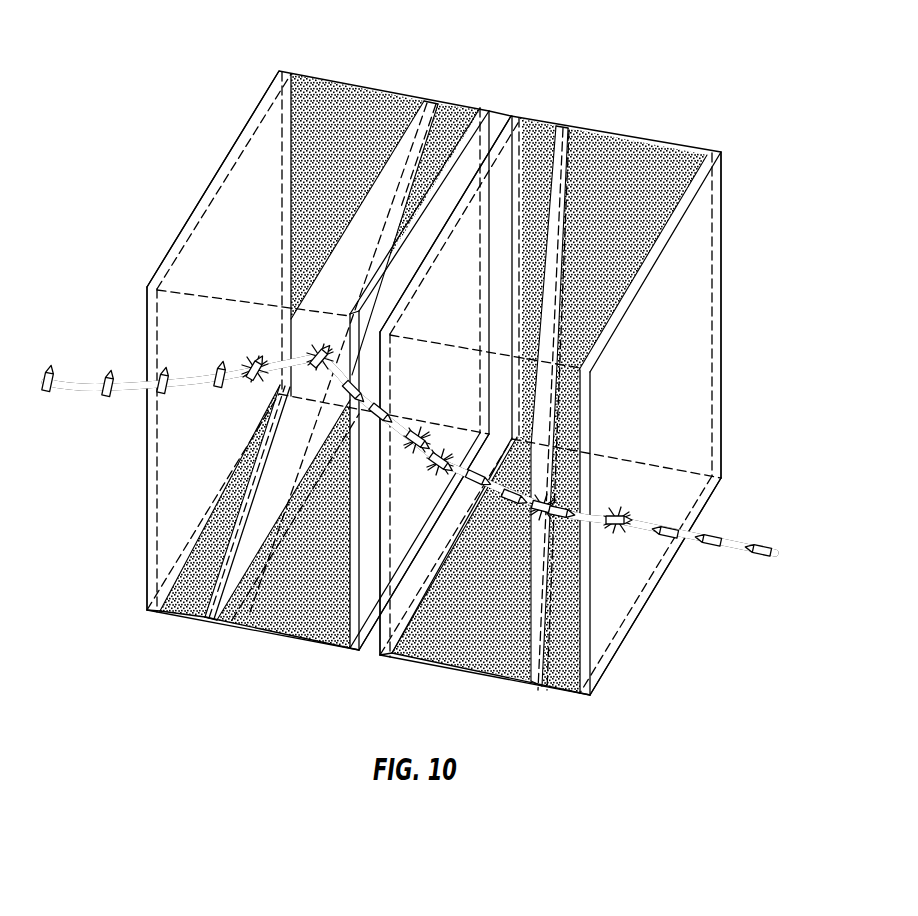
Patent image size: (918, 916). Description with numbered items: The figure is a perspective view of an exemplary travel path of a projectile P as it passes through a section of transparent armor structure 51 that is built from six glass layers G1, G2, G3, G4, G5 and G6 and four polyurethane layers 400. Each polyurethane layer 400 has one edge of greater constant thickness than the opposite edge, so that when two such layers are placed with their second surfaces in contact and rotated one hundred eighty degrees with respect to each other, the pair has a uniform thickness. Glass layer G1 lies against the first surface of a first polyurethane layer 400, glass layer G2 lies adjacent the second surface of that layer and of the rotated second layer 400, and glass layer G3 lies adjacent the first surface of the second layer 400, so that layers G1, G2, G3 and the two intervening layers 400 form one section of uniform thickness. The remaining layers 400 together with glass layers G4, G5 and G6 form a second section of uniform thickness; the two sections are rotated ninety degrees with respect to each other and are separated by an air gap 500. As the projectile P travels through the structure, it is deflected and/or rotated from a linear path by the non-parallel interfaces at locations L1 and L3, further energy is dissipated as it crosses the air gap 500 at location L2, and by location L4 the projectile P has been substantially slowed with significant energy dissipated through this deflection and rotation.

The detector assembly 51 is at (736, 188).
The polyurethane layer 400 is at (408, 102).
The air gap 500 is at (506, 104).
The glass layer G1 is at (700, 322).
The glass layer G2 is at (590, 682).
The glass layer G3 is at (381, 656).
The glass layer G4 is at (472, 130).
The glass layer G5 is at (212, 620).
The glass layer G6 is at (170, 455).
The location L1 is at (547, 493).
The location L2 is at (410, 424).
The location L3 is at (322, 351).
The location L4 is at (253, 356).
The projectile P is at (632, 503).